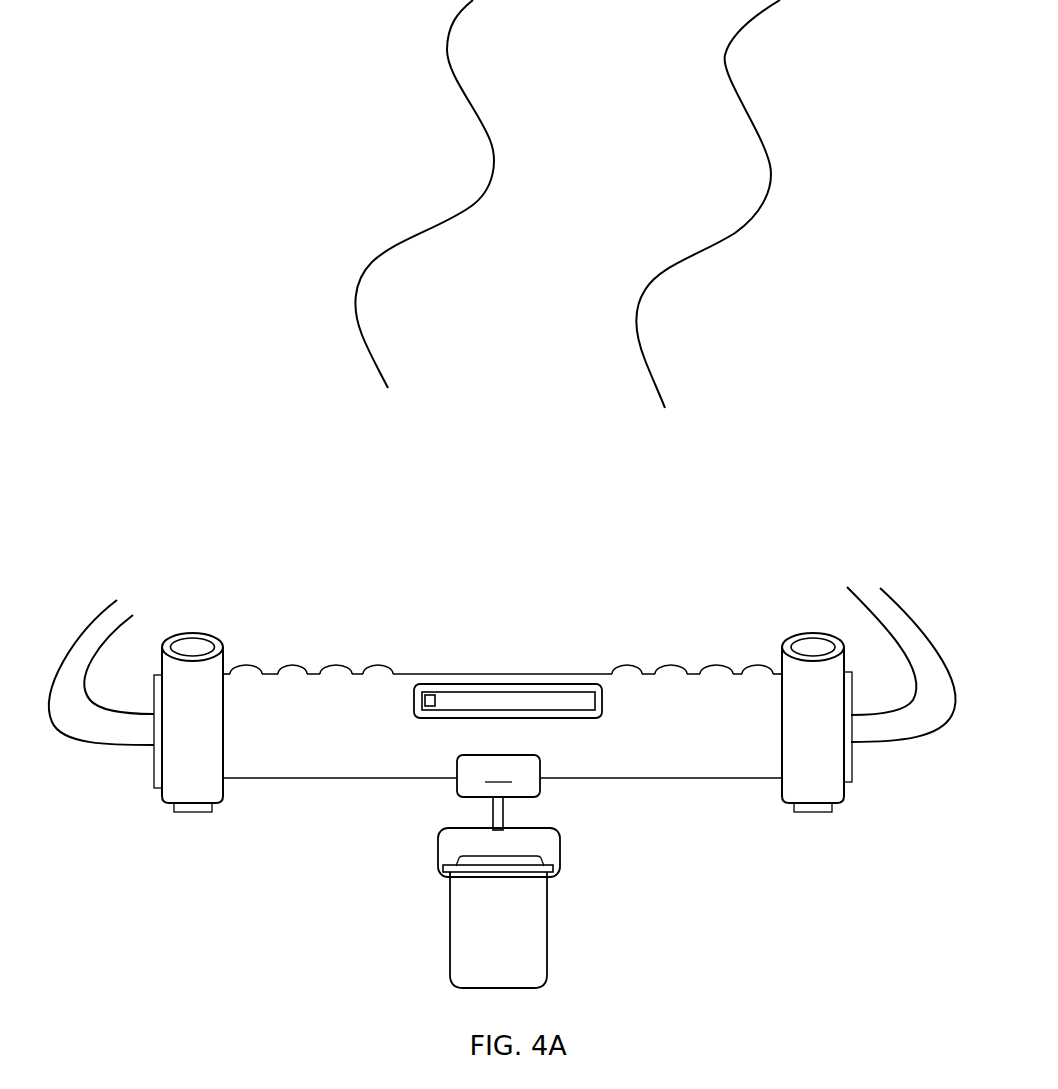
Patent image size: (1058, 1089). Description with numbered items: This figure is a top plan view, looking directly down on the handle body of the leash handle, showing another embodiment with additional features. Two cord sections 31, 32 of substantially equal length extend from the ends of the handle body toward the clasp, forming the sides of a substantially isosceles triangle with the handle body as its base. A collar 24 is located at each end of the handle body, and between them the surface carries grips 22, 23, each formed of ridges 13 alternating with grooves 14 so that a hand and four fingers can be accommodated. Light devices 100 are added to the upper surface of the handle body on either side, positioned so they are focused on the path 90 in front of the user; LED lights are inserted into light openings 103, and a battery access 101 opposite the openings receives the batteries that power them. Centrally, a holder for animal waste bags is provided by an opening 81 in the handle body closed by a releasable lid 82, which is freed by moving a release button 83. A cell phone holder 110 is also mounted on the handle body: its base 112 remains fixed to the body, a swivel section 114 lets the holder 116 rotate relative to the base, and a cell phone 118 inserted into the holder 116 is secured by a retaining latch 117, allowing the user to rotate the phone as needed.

The path 90 is at (587, 68).
The cord section 32 is at (70, 663).
The cord section 31 is at (892, 612).
The collar 24 is at (854, 778).
The light device 100 is at (491, 725).
The light opening 103 is at (203, 632).
The battery access 101 is at (185, 812).
The grip 22 is at (317, 692).
The grip 23 is at (697, 702).
The groove 14 is at (312, 665).
The ridge 13 is at (332, 663).
The opening 81 is at (548, 683).
The lid 82 is at (575, 693).
The release button 83 is at (432, 690).
The cell phone holder 110 is at (498, 776).
The base 112 is at (455, 794).
The swivel section 114 is at (505, 809).
The holder 116 is at (560, 860).
The retaining latch 117 is at (438, 867).
The cell phone 118 is at (447, 942).